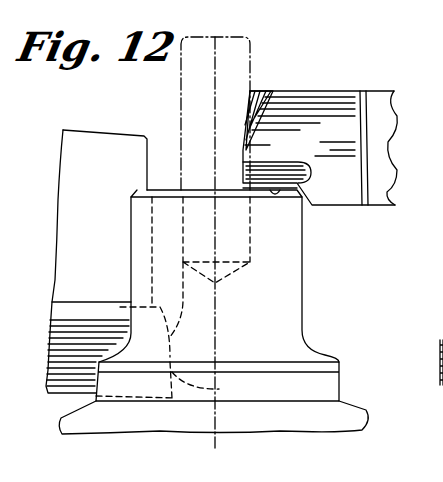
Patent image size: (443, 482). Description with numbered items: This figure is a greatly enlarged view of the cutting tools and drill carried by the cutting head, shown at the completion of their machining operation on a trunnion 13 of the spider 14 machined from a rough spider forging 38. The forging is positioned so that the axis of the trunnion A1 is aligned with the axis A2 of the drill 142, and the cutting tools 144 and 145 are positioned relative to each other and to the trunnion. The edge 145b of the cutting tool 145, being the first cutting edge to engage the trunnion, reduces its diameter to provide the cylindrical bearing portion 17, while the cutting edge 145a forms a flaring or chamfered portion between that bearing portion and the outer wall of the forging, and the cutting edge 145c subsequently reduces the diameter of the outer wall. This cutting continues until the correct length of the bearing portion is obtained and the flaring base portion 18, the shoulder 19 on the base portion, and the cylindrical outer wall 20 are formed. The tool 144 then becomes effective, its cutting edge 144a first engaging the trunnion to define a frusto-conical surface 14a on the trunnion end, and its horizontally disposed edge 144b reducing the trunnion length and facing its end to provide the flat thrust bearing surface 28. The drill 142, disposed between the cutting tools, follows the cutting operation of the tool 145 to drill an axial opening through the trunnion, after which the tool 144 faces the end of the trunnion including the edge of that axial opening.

The trunnion 13 is at (64, 95).
The drill 142 is at (258, 46).
The axis of the drill A2 is at (215, 78).
The cutting tool 144 is at (344, 86).
The horizontally disposed edge 144b is at (283, 187).
The cutting edge 144a is at (311, 207).
The cylindrical bearing portion 17 is at (288, 263).
The thrust bearing surface 28 is at (203, 183).
The axis of the trunnion A1 is at (215, 320).
The cutting tool 145 is at (129, 124).
The frusto-conical surface 14a is at (134, 193).
The cutting edge 145a is at (164, 309).
The shoulder 19 is at (339, 366).
The base portion 18 is at (322, 351).
The cylindrical outer wall 20 is at (339, 386).
The cutting edge 145b is at (184, 380).
The cutting edge 145c is at (177, 404).
The spider 14 is at (105, 430).
The spider forging 38 is at (433, 404).